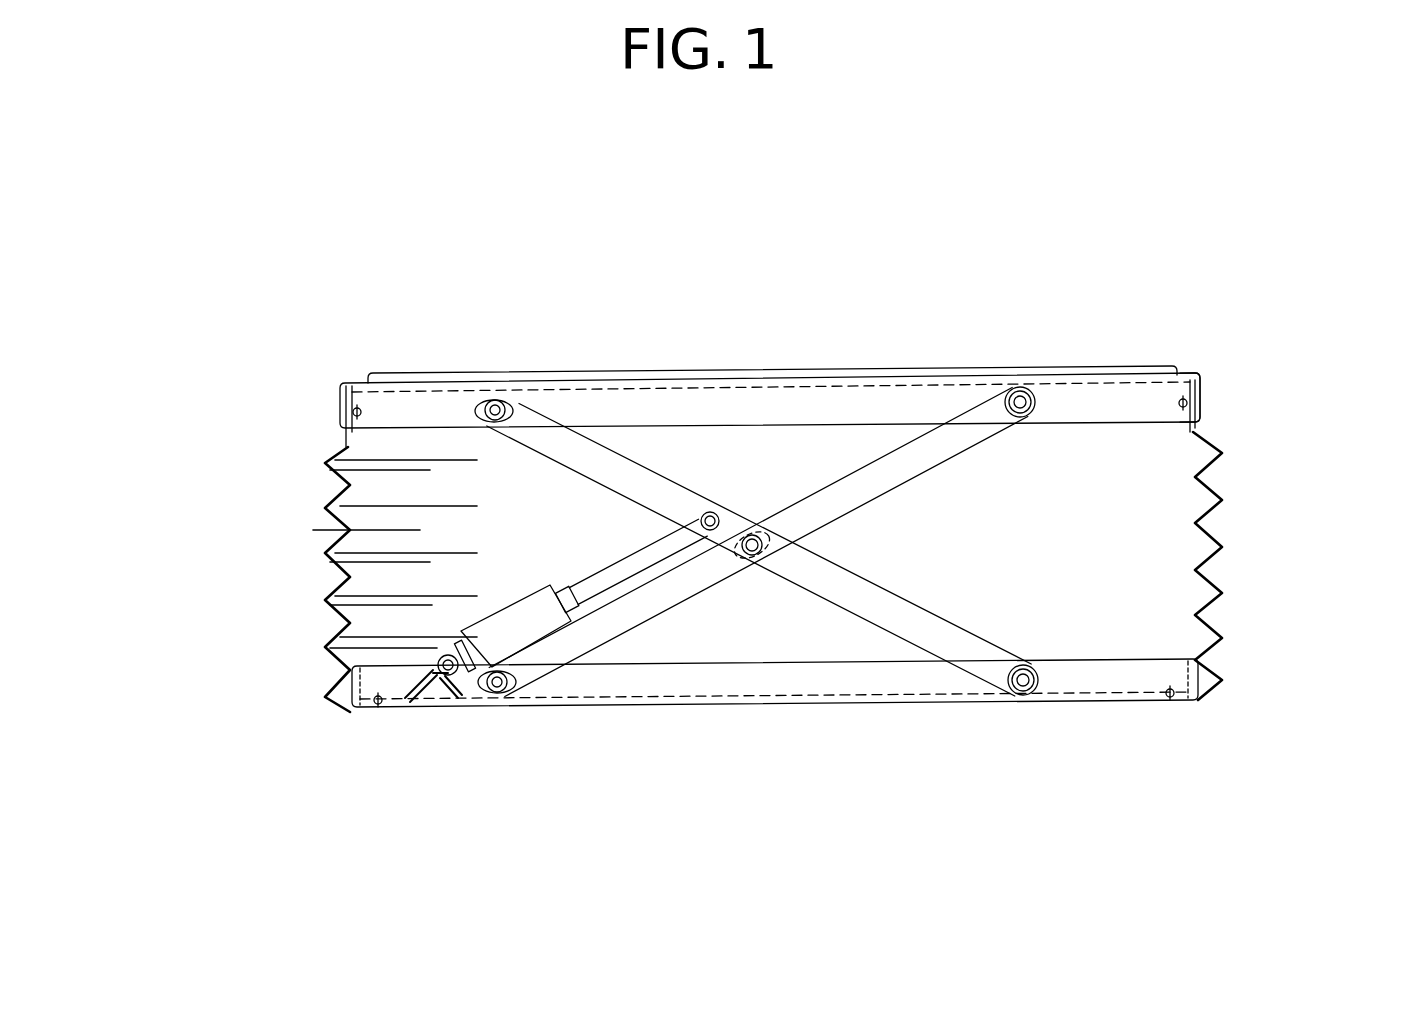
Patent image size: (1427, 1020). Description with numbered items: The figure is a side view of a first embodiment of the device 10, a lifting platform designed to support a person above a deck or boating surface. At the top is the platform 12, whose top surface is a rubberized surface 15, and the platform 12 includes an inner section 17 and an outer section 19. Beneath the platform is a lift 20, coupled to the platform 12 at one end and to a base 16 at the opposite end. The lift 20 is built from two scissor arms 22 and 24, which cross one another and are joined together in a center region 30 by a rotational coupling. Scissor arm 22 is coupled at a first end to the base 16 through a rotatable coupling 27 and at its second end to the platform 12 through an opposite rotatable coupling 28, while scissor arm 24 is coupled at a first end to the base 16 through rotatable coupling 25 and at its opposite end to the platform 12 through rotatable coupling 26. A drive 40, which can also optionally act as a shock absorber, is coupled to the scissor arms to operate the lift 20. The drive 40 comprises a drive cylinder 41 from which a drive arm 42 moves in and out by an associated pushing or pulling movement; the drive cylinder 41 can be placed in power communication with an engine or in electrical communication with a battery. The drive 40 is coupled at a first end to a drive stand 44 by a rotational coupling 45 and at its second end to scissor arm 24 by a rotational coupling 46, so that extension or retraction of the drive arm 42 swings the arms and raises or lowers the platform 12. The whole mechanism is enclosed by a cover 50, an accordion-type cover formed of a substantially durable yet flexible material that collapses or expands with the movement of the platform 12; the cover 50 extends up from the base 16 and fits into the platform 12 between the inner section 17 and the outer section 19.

The device 10 is at (510, 255).
The platform 12 is at (355, 346).
The rubberized surface 15 is at (840, 376).
The base 16 is at (395, 705).
The inner section 17 is at (1192, 406).
The outer section 19 is at (1200, 381).
The lift 20 is at (711, 443).
The scissor arm 22 is at (655, 597).
The scissor arm 24 is at (905, 612).
The rotatable coupling 25 is at (1028, 694).
The rotatable coupling 26 is at (483, 409).
The rotatable coupling 27 is at (500, 692).
The rotatable coupling 28 is at (1010, 387).
The center region 30 is at (760, 556).
The drive 40 is at (532, 661).
The drive cylinder 41 is at (517, 618).
The drive arm 42 is at (622, 565).
The drive stand 44 is at (412, 696).
The rotational coupling 45 is at (445, 668).
The rotational coupling 46 is at (700, 519).
The cover 50 is at (340, 567).